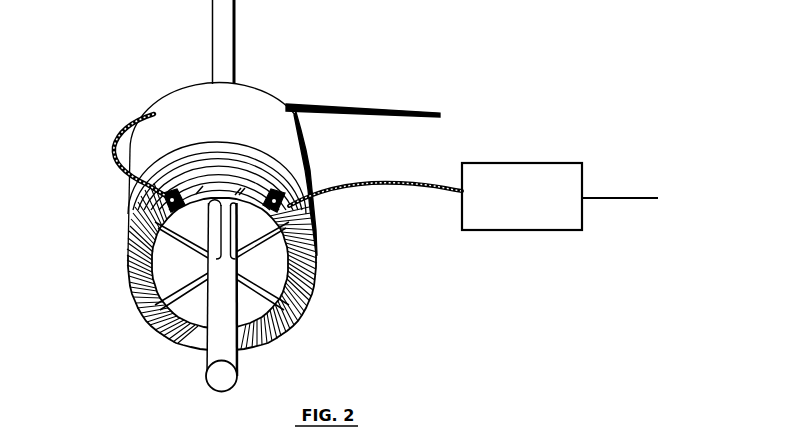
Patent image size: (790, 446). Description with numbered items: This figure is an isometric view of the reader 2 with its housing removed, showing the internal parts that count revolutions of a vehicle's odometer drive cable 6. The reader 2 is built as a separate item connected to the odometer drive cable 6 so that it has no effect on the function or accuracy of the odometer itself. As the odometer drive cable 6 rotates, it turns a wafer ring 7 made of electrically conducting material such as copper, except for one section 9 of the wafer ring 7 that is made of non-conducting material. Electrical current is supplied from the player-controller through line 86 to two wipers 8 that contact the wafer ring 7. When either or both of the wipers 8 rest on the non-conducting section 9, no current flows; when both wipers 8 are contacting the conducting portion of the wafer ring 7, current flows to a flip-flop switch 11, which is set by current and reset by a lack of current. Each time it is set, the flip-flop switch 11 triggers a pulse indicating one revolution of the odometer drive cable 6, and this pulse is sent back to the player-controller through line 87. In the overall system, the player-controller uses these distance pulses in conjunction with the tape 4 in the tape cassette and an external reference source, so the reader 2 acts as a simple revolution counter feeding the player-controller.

The reader 2 is at (258, 107).
The tape 4 is at (118, 132).
The odometer drive cable 6 is at (218, 53).
The wafer ring 7 is at (295, 318).
The wipers 8 is at (288, 212).
The non-conducting section 9 is at (255, 195).
The flip-flop switch 11 is at (523, 176).
The line 86 is at (387, 108).
The line 87 is at (617, 198).